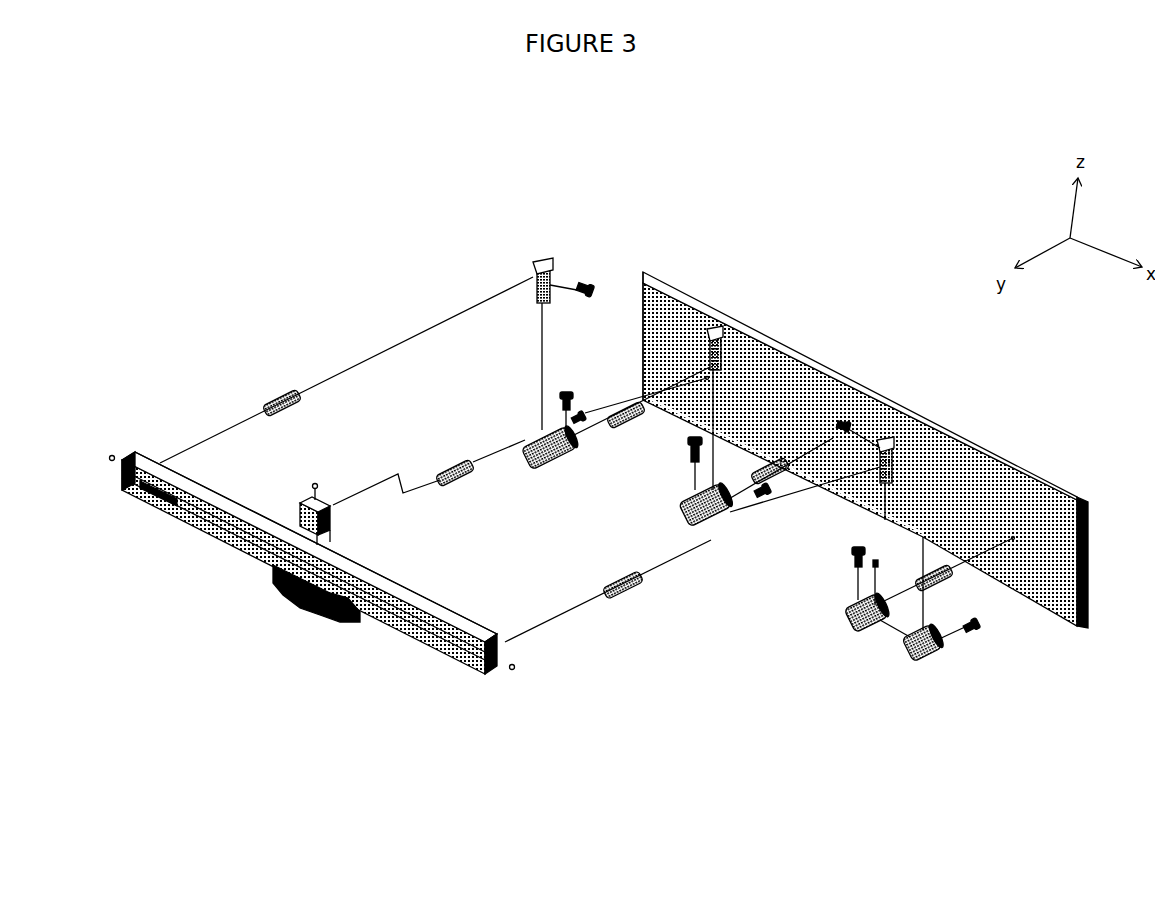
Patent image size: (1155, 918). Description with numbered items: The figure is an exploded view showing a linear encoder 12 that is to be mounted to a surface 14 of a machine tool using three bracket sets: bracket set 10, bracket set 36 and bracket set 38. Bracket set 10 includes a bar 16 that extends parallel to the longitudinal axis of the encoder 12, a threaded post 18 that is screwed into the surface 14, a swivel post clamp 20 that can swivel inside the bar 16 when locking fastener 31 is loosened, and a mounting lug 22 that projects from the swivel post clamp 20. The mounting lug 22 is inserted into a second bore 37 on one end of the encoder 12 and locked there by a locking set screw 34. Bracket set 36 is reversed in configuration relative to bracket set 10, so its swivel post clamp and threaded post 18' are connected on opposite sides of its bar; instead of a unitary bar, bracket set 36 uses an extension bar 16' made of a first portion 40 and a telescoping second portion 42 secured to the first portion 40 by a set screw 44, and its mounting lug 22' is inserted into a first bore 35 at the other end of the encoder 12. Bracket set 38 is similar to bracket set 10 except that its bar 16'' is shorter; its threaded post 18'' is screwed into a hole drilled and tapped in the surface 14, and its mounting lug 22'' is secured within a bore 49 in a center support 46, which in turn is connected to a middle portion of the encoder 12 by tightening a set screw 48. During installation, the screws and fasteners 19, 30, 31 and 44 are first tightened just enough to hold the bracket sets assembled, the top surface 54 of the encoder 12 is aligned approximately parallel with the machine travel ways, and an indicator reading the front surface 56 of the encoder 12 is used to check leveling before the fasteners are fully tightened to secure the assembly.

The bracket set 10 is at (545, 470).
The linear encoder 12 is at (420, 640).
The surface 14 is at (1033, 583).
The bar 16 is at (346, 339).
The extension bar 16' is at (821, 608).
The bar 16'' is at (748, 657).
The threaded post 18 is at (642, 286).
The threaded post 18' is at (990, 495).
The threaded post 18'' is at (811, 380).
The locking fastener 19 is at (562, 393).
The swivel post clamp 20 is at (537, 268).
The mounting lug 22 is at (237, 330).
The mounting lug 22' is at (632, 701).
The mounting lug 22'' is at (404, 583).
The locking fastener 30 is at (588, 277).
The locking fastener 31 is at (584, 420).
The locking set screw 34 is at (107, 450).
The first bore 35 is at (483, 668).
The bracket set 36 is at (897, 655).
The second bore 37 is at (127, 487).
The bracket set 38 is at (676, 508).
The first portion 40 is at (867, 627).
The telescoping second portion 42 is at (925, 663).
The set screw 44 is at (878, 563).
The center support 46 is at (277, 567).
The set screw 48 is at (213, 530).
The bore 49 is at (305, 488).
The top surface 54 is at (207, 487).
The front surface 56 is at (147, 497).